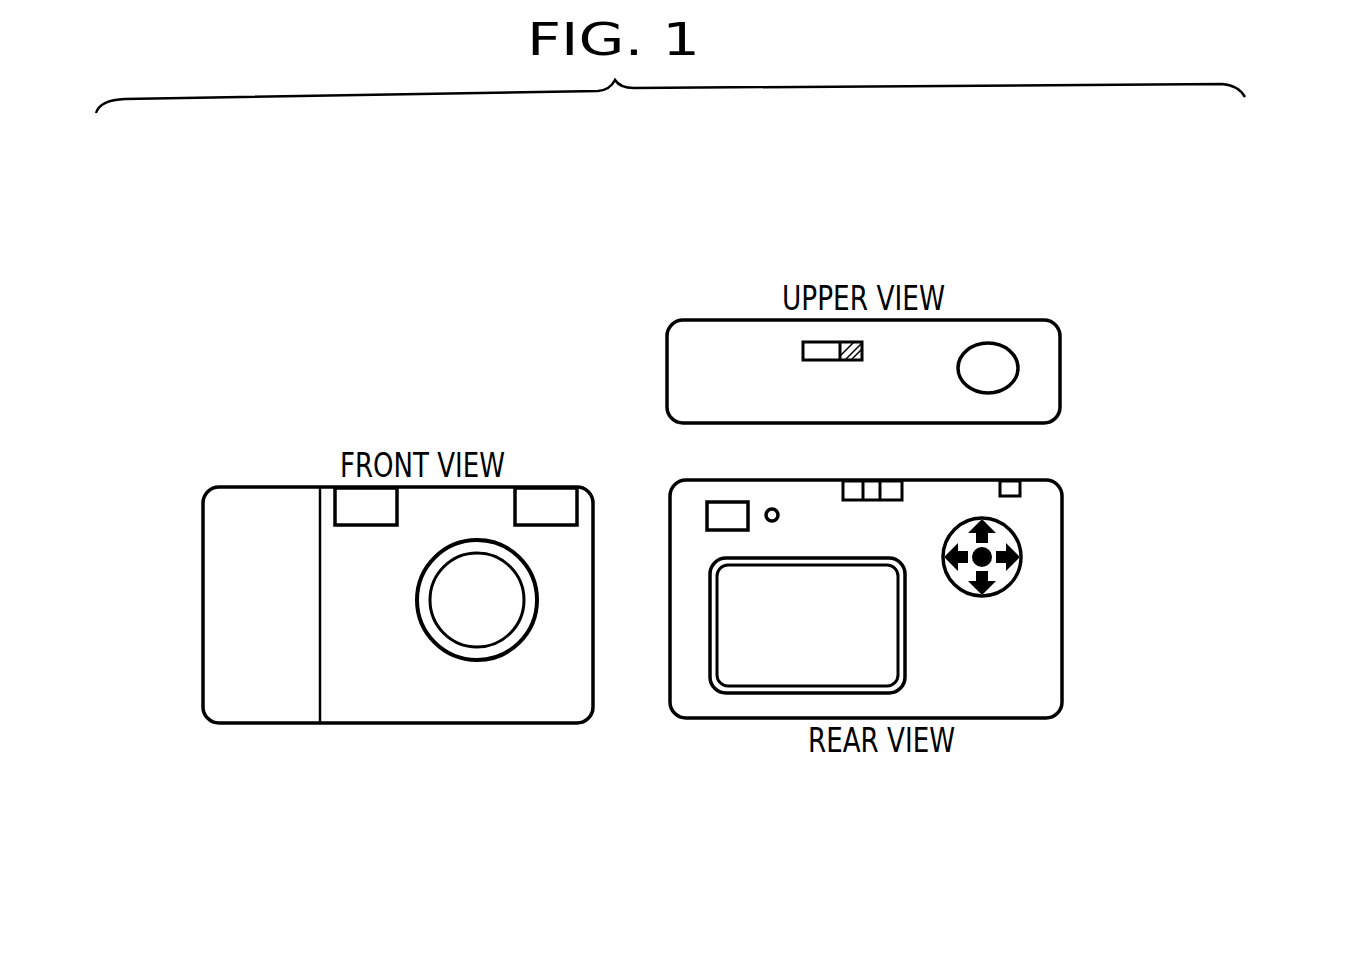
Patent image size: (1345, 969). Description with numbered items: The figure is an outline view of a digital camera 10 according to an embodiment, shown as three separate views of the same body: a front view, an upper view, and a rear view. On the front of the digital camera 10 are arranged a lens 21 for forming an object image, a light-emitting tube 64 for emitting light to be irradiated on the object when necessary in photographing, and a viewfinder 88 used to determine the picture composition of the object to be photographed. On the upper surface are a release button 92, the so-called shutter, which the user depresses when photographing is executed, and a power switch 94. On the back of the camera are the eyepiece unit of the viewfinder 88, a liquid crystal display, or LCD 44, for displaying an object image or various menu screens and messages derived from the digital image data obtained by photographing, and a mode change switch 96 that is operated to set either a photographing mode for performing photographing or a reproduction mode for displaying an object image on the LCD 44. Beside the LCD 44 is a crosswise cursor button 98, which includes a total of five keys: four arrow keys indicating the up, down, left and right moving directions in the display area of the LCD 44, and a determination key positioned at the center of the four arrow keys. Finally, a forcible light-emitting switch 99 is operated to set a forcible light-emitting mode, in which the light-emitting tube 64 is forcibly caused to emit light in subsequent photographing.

The digital camera 10 is at (334, 350).
The light-emitting tube 64 is at (350, 497).
The viewfinder 88 is at (717, 510).
The lens 21 is at (467, 643).
The power switch 94 is at (820, 340).
The release button 92 is at (988, 358).
The mode change switch 96 is at (940, 463).
The forcible light-emitting switch 99 is at (1018, 491).
The liquid crystal display 44 is at (808, 683).
The crosswise cursor button 98 is at (973, 593).